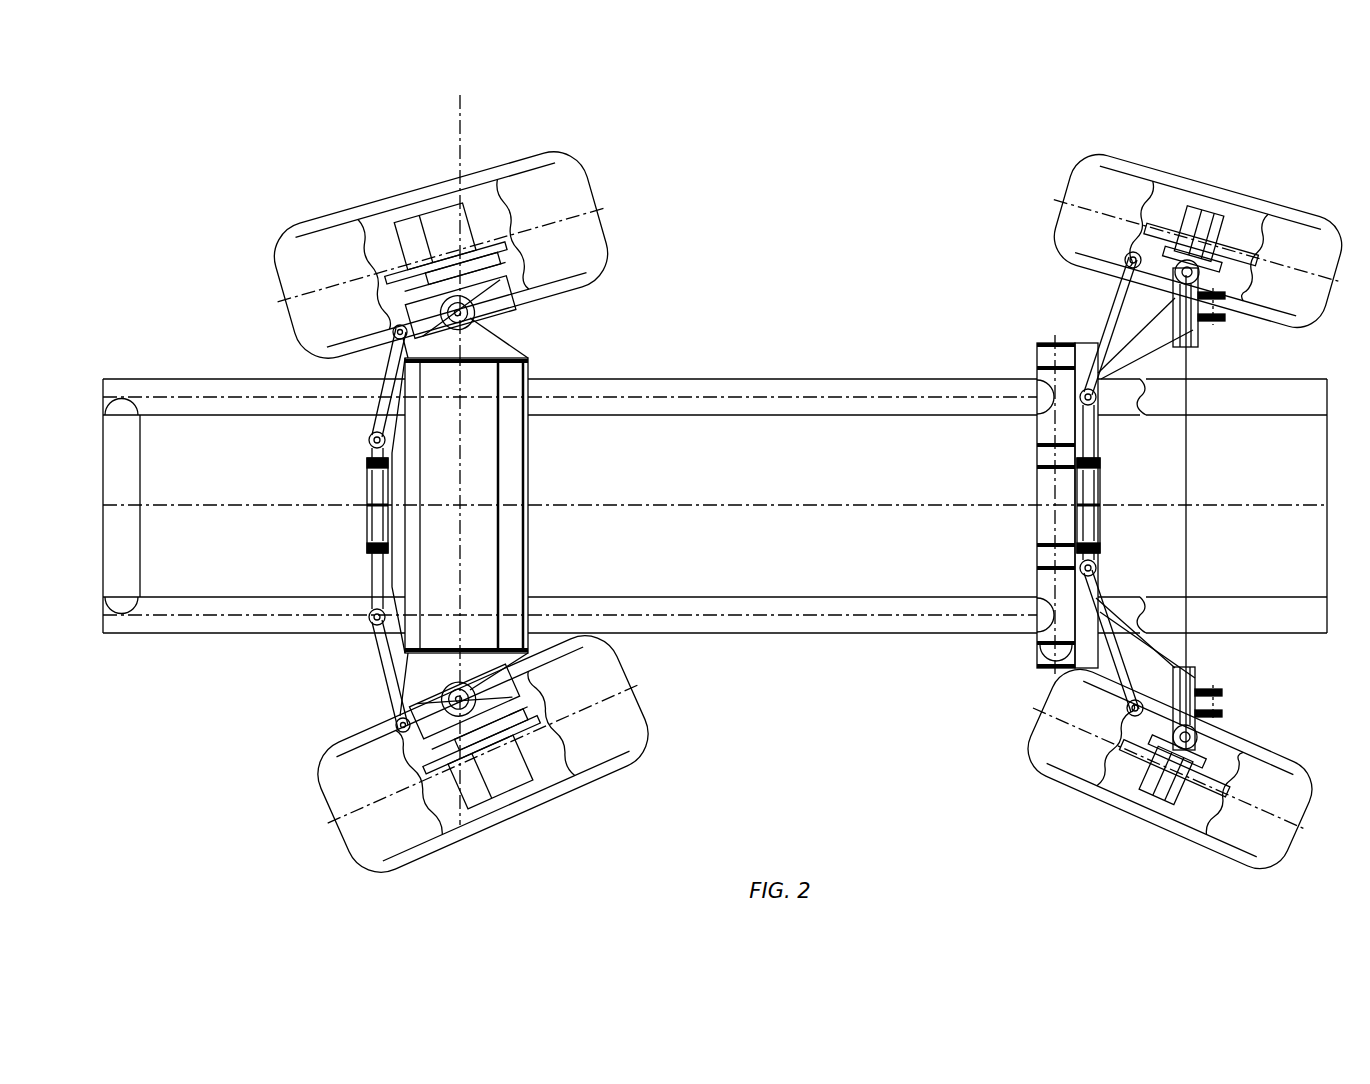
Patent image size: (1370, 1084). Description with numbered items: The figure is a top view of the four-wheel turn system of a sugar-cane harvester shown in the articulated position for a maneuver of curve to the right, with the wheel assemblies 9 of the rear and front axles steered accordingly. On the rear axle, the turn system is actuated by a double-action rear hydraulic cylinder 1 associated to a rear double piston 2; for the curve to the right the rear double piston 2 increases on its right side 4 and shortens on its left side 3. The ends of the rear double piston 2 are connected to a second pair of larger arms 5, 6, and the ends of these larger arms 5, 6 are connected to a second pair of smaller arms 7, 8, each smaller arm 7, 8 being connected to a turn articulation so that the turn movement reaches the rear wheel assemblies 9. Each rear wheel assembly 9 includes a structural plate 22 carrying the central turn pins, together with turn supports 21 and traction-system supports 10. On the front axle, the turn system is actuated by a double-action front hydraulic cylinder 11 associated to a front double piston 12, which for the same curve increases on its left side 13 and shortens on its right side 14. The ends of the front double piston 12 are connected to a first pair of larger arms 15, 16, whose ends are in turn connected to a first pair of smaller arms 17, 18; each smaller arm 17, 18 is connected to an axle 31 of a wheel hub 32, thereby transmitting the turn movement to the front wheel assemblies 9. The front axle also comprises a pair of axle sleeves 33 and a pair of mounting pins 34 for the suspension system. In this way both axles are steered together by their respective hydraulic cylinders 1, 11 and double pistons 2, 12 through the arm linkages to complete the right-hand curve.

The rear hydraulic cylinder 1 is at (358, 494).
The rear double piston 2 is at (360, 545).
The left side of rear double piston 3 is at (364, 452).
The right side of rear double piston 4 is at (366, 571).
The larger arm 5 is at (386, 383).
The larger arm 6 is at (381, 679).
The smaller arm 7 is at (390, 311).
The smaller arm 8 is at (413, 740).
The wheel assembly 9 is at (289, 328).
The traction-system support 10 is at (407, 211).
The front hydraulic cylinder 11 is at (1113, 500).
The front double piston 12 is at (1076, 545).
The left side of front double piston 13 is at (1101, 429).
The right side of front double piston 14 is at (1102, 561).
The larger arm 15 is at (1107, 311).
The larger arm 16 is at (1112, 640).
The smaller arm 17 is at (1146, 266).
The smaller arm 18 is at (1141, 723).
The turn support 21 is at (520, 298).
The structural plate 22 is at (530, 345).
The axle 31 is at (1214, 211).
The wheel hub 32 is at (1186, 195).
The axle sleeve 33 is at (1195, 341).
The mounting pin 34 is at (1226, 319).